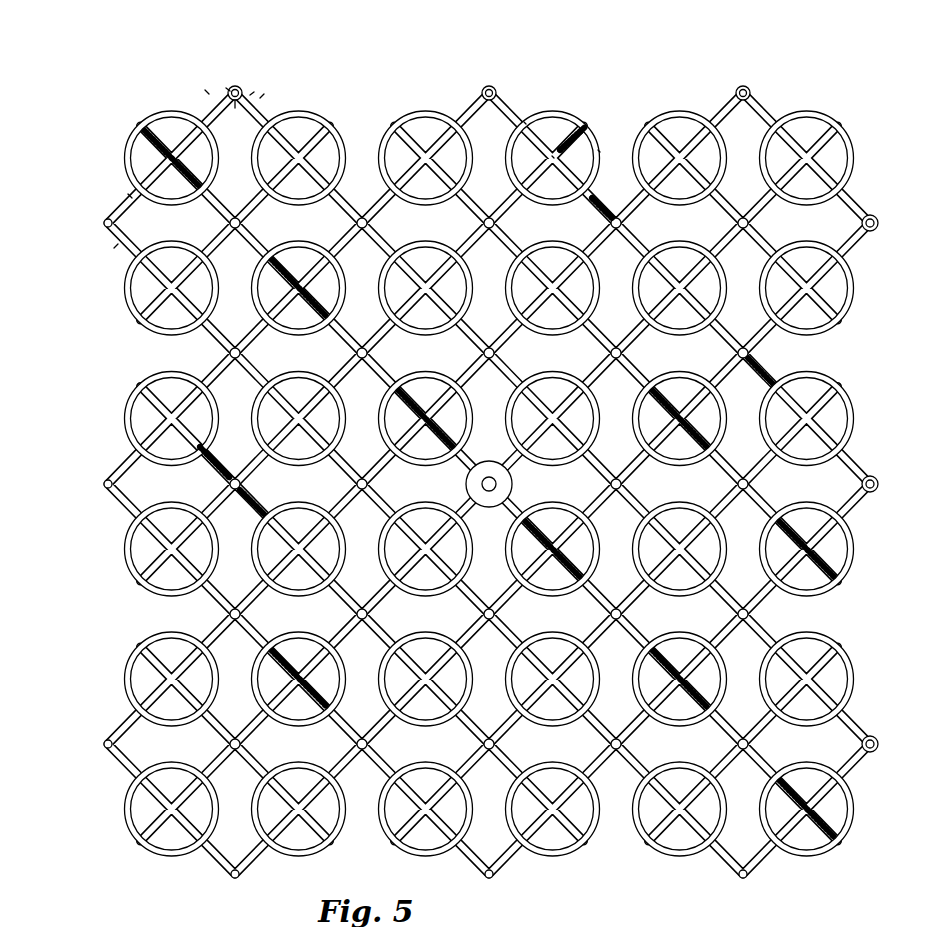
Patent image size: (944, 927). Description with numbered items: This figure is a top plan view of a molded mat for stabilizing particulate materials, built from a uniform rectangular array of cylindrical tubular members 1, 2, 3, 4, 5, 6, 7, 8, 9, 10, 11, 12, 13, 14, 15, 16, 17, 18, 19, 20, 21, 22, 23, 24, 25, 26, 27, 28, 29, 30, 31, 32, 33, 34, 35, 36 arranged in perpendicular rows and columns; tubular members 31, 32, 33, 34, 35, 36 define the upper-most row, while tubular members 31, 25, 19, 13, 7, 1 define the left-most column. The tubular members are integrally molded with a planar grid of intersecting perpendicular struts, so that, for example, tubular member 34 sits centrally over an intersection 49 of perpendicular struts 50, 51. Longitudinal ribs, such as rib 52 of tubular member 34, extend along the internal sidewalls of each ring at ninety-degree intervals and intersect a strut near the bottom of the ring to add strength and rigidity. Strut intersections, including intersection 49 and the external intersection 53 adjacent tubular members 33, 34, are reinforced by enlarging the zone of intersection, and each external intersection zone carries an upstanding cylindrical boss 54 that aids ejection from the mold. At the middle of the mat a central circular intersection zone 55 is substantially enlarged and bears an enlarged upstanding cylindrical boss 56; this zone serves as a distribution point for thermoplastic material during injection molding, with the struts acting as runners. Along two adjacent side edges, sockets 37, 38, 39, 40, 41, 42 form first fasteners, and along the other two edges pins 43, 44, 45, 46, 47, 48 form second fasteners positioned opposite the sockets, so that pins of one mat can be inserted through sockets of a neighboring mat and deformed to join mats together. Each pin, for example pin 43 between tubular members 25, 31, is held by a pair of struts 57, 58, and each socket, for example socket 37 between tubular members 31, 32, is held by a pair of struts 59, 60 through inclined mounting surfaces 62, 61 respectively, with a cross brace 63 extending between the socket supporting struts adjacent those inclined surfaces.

The tubular member 1 is at (172, 793).
The tubular member 2 is at (299, 793).
The tubular member 3 is at (426, 793).
The tubular member 4 is at (553, 793).
The tubular member 5 is at (680, 793).
The tubular member 6 is at (807, 793).
The tubular member 7 is at (172, 663).
The tubular member 8 is at (299, 663).
The tubular member 9 is at (426, 663).
The tubular member 10 is at (553, 663).
The tubular member 11 is at (680, 663).
The tubular member 12 is at (807, 663).
The tubular member 13 is at (172, 533).
The tubular member 14 is at (299, 533).
The tubular member 15 is at (426, 533).
The tubular member 16 is at (553, 533).
The tubular member 17 is at (680, 533).
The tubular member 18 is at (807, 533).
The tubular member 19 is at (172, 403).
The tubular member 20 is at (299, 403).
The tubular member 21 is at (426, 403).
The tubular member 22 is at (553, 403).
The tubular member 23 is at (680, 403).
The tubular member 24 is at (807, 403).
The tubular member 25 is at (172, 272).
The tubular member 26 is at (299, 272).
The tubular member 27 is at (426, 272).
The tubular member 28 is at (553, 272).
The tubular member 29 is at (680, 272).
The tubular member 30 is at (807, 272).
The tubular member 31 is at (138, 125).
The tubular member 32 is at (336, 127).
The tubular member 33 is at (397, 125).
The tubular member 34 is at (541, 114).
The tubular member 35 is at (648, 120).
The tubular member 36 is at (775, 122).
The socket 37 is at (236, 82).
The socket 38 is at (490, 80).
The socket 39 is at (744, 80).
The socket 40 is at (868, 212).
The socket 41 is at (869, 473).
The socket 42 is at (869, 734).
The pin 43 is at (104, 223).
The pin 44 is at (106, 480).
The pin 45 is at (106, 740).
The pin 46 is at (236, 876).
The pin 47 is at (490, 876).
The pin 48 is at (744, 876).
The intersection 49 is at (553, 156).
The strut 50 is at (568, 144).
The strut 51 is at (599, 150).
The longitudinal rib 52 is at (522, 125).
The external intersection 53 is at (488, 250).
The upstanding cylindrical boss 54 is at (488, 216).
The central circular intersection zone 55 is at (488, 460).
The enlarged upstanding cylindrical boss 56 is at (488, 506).
The strut 57 is at (118, 248).
The strut 58 is at (128, 194).
The strut 59 is at (205, 90).
The strut 60 is at (264, 94).
The inclined mounting surface 61 is at (254, 92).
The inclined mounting surface 62 is at (226, 88).
The cross brace 63 is at (236, 110).